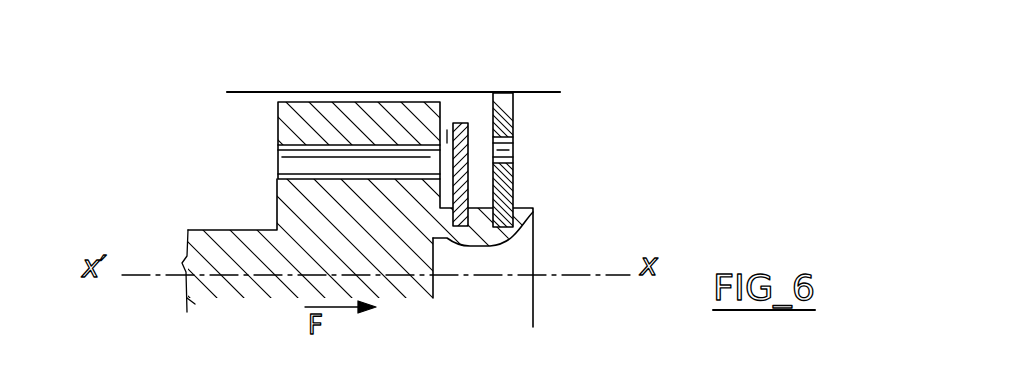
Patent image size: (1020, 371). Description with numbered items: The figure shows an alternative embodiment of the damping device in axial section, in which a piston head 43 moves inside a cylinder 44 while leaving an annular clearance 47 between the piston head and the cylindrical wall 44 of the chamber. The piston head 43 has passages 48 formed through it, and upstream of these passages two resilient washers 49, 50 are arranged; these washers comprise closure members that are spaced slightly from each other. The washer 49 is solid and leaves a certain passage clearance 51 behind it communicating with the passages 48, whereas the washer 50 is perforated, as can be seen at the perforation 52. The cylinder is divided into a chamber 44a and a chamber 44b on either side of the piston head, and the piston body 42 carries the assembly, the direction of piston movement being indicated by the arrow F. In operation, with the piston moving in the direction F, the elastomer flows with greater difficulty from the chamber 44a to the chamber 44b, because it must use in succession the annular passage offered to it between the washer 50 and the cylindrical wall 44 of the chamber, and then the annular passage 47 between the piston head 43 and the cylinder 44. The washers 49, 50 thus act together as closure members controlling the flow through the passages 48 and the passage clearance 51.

The hub body 42 is at (215, 257).
The piston head 43 is at (390, 120).
The cylinder 44 is at (254, 96).
The chamber 44a is at (600, 201).
The chamber 44b is at (188, 191).
The annular clearance 47 is at (334, 92).
The passages 48 is at (295, 166).
The resilient washer 49 is at (463, 122).
The resilient washer 50 is at (513, 108).
The passage clearance 51 is at (447, 140).
The perforation 52 is at (513, 150).